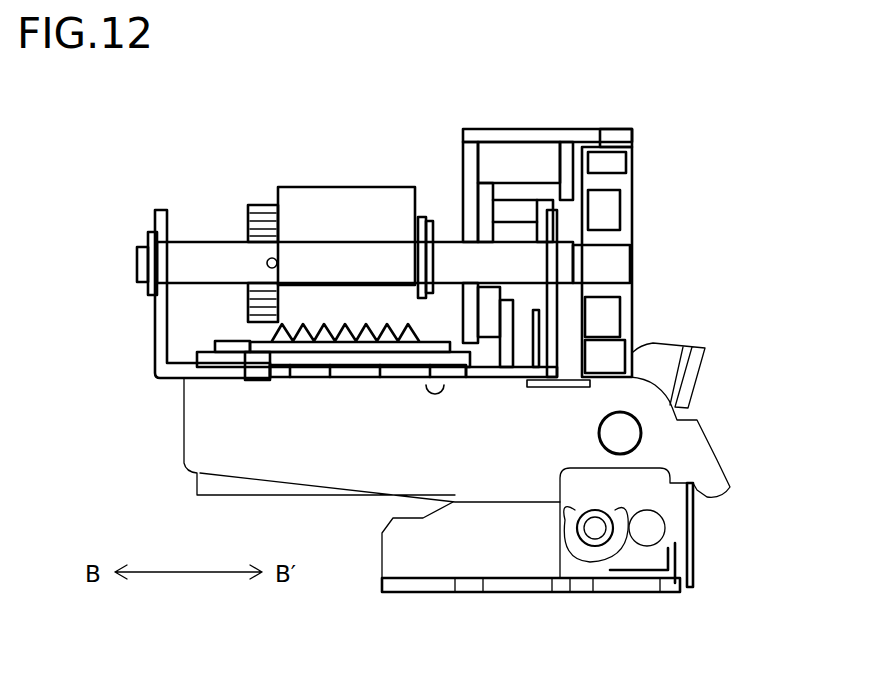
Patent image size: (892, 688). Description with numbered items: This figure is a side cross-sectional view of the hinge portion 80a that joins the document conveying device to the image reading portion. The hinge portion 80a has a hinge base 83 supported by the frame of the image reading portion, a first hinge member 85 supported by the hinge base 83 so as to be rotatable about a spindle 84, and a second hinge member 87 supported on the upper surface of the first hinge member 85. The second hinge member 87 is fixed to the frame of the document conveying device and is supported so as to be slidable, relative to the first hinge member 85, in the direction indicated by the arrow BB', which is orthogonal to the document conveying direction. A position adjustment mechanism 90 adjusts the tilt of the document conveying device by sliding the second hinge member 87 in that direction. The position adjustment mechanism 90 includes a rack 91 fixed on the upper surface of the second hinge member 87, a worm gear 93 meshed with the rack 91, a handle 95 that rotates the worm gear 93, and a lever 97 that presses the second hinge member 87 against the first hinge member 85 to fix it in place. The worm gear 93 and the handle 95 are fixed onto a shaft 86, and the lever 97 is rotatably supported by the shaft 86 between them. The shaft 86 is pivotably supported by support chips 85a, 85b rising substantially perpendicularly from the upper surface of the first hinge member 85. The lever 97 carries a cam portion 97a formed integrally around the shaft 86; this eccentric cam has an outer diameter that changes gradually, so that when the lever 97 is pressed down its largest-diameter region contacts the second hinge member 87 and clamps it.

The hinge portion 80a is at (717, 382).
The hinge base 83 is at (485, 567).
The spindle 84 is at (622, 433).
The first hinge member 85 is at (198, 430).
The support chip 85a is at (155, 340).
The support chip 85b is at (547, 323).
The shaft 86 is at (213, 248).
The second hinge member 87 is at (313, 357).
The position adjustment mechanism 90 is at (667, 150).
The rack 91 is at (370, 343).
The worm gear 93 is at (313, 187).
The handle 95 is at (623, 222).
The lever 97 is at (520, 128).
The cam portion 97a is at (483, 330).